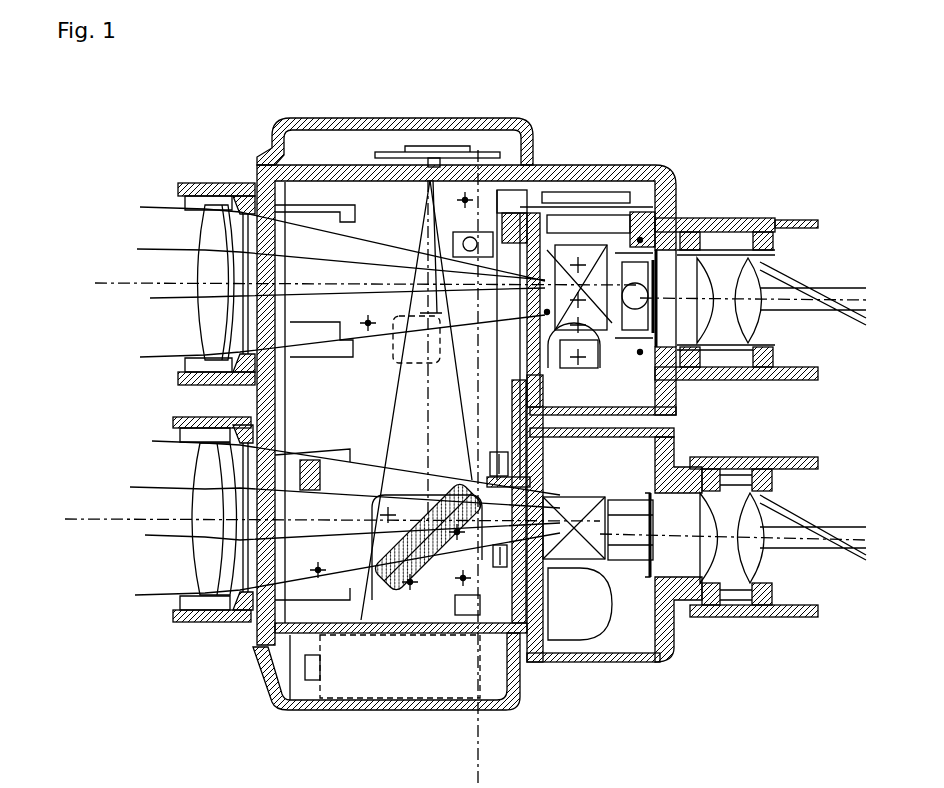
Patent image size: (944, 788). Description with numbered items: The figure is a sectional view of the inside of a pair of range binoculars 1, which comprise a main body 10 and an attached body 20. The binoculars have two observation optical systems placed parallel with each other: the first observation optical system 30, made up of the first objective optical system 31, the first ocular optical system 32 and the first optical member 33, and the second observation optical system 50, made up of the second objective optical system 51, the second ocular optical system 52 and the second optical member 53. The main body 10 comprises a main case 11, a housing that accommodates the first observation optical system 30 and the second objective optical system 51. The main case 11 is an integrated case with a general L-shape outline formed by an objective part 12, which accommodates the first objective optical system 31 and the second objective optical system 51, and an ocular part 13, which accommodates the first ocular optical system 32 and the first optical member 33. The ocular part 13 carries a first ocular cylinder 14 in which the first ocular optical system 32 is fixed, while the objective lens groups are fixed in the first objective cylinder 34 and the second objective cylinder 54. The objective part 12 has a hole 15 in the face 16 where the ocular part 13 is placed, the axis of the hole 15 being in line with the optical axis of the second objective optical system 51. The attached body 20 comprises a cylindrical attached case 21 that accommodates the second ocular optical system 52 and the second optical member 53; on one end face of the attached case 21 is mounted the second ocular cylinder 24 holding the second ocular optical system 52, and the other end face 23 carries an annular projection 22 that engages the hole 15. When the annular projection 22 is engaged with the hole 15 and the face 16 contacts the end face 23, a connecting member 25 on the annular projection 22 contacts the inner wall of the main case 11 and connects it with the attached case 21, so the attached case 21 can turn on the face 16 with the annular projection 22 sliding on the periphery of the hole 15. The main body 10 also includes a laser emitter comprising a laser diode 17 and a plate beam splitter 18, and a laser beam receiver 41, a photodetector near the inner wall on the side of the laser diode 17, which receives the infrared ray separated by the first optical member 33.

The range binoculars 1 is at (240, 148).
The main body 10 is at (507, 710).
The main case 11 is at (290, 711).
The objective part 12 is at (283, 118).
The ocular part 13 is at (672, 175).
The first ocular cylinder 14 is at (813, 220).
The hole 15 is at (466, 615).
The face 16 is at (535, 423).
The laser diode 17 is at (456, 150).
The plate beam splitter 18 is at (376, 600).
The attached body 20 is at (675, 653).
The attached case 21 is at (635, 662).
The annular projection 22 is at (513, 665).
The end face 23 is at (520, 660).
The second ocular cylinder 24 is at (802, 614).
The connecting member 25 is at (503, 452).
The first observation optical system 30 is at (90, 243).
The first objective optical system 31 is at (205, 322).
The first ocular optical system 32 is at (762, 320).
The first optical member 33 is at (560, 245).
The first objective cylinder 34 is at (183, 183).
The laser beam receiver 41 is at (608, 192).
The second observation optical system 50 is at (105, 465).
The second objective optical system 51 is at (203, 570).
The second ocular optical system 52 is at (762, 572).
The second optical member 53 is at (615, 598).
The second objective cylinder 54 is at (178, 623).